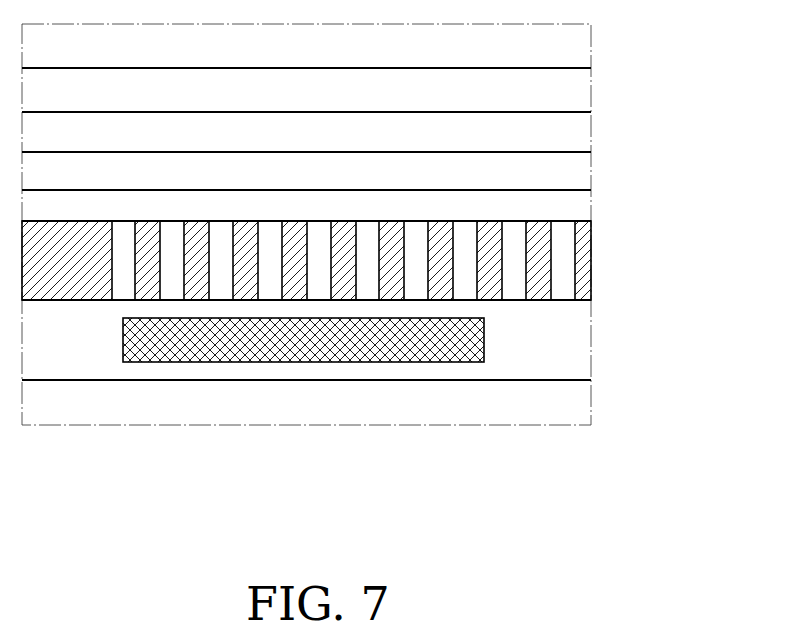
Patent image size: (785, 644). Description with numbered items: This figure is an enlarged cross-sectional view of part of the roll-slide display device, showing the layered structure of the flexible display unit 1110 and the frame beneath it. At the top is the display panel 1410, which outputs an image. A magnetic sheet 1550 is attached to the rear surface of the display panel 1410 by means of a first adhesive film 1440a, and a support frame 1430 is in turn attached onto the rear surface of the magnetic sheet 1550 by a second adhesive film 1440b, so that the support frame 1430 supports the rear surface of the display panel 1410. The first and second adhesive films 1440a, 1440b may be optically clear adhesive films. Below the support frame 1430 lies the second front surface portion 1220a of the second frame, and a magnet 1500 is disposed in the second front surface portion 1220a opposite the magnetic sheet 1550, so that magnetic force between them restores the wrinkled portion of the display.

The flexible display unit 1110 is at (703, 70).
The display panel 1410 is at (562, 92).
The first adhesive film 1440a is at (562, 136).
The magnetic sheet 1550 is at (562, 174).
The second adhesive film 1440b is at (562, 209).
The support frame 1430 is at (582, 263).
The second front surface portion 1220a is at (562, 339).
The magnet 1500 is at (292, 350).